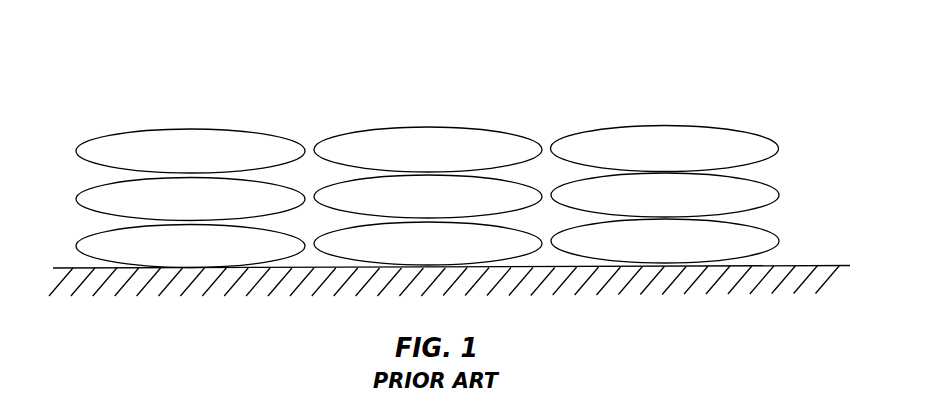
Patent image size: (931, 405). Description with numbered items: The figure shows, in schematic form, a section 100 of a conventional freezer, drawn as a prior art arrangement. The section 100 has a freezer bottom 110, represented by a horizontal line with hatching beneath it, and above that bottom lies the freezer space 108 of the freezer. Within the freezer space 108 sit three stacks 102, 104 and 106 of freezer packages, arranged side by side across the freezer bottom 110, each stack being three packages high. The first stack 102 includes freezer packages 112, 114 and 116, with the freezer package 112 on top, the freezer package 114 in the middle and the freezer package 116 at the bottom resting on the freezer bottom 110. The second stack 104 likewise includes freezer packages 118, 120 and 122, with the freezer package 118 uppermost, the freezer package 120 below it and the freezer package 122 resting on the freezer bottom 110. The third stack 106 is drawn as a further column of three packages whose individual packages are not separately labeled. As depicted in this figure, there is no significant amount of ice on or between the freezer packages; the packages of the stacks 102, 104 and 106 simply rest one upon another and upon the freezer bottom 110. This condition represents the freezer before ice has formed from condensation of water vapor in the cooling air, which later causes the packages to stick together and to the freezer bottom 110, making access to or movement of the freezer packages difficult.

The section of a conventional freezer 100 is at (322, 33).
The stack 102 is at (187, 110).
The stack 104 is at (429, 125).
The stack 106 is at (712, 123).
The freezer space 108 is at (323, 104).
The freezer bottom 110 is at (833, 265).
The freezer package 112 is at (246, 160).
The freezer package 114 is at (246, 208).
The freezer package 116 is at (246, 255).
The freezer package 118 is at (400, 158).
The freezer package 120 is at (400, 206).
The freezer package 122 is at (400, 253).